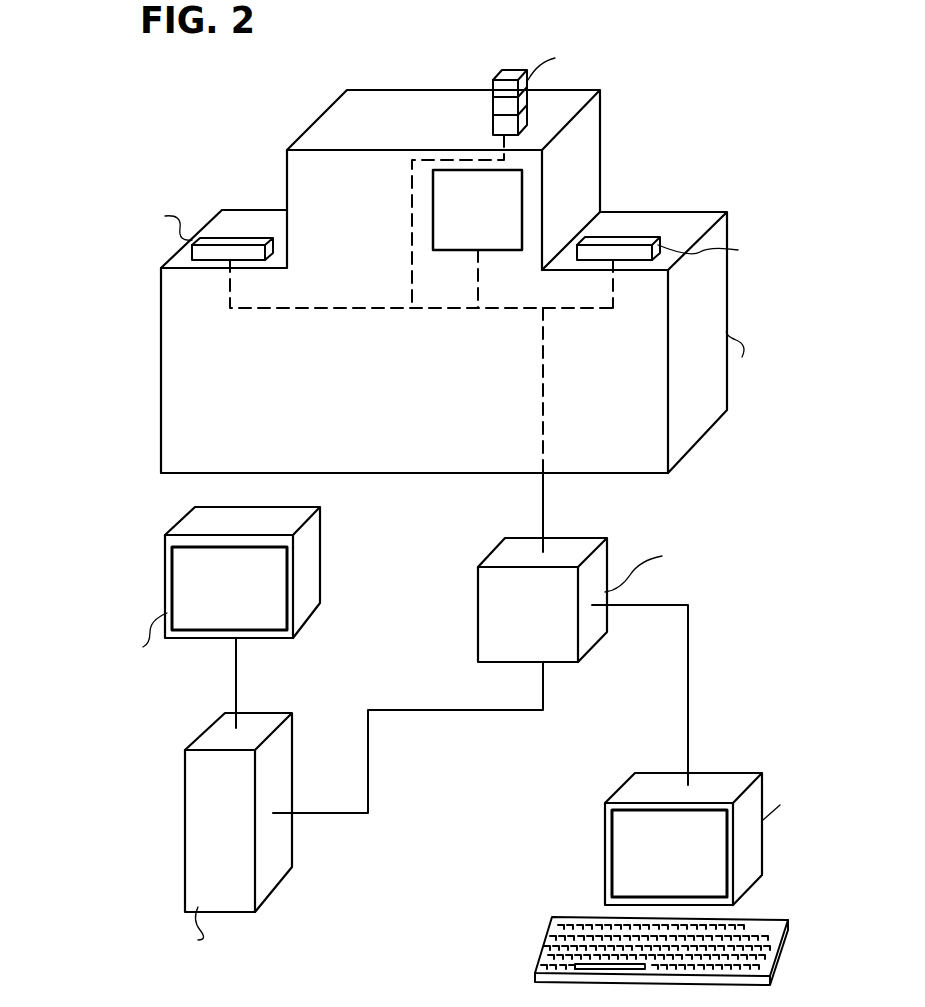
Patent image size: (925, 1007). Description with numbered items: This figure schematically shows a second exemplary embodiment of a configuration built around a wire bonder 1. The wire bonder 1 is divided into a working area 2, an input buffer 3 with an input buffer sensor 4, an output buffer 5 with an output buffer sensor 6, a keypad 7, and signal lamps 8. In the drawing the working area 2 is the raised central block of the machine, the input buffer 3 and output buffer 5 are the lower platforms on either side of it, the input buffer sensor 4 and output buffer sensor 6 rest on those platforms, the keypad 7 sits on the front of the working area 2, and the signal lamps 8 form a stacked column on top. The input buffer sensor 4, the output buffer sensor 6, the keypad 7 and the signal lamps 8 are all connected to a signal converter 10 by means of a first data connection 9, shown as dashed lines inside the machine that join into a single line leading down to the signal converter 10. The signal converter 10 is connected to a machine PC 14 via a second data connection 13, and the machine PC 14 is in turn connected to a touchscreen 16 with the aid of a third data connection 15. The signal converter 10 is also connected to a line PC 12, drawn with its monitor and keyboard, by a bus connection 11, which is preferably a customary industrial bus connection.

The wire bonder 1 is at (445, 501).
The working area 2 is at (407, 98).
The input buffer 3 is at (235, 218).
The input buffer sensor 4 is at (216, 255).
The output buffer 5 is at (662, 215).
The output buffer sensor 6 is at (628, 255).
The keypad 7 is at (450, 250).
The signal lamps 8 is at (508, 68).
The first data connection 9 is at (543, 510).
The signal converter 10 is at (605, 563).
The bus connection 11 is at (648, 605).
The line PC 12 is at (655, 780).
The second data connection 13 is at (400, 710).
The machine PC 14 is at (285, 758).
The third data connection 15 is at (236, 690).
The touchscreen 16 is at (312, 575).